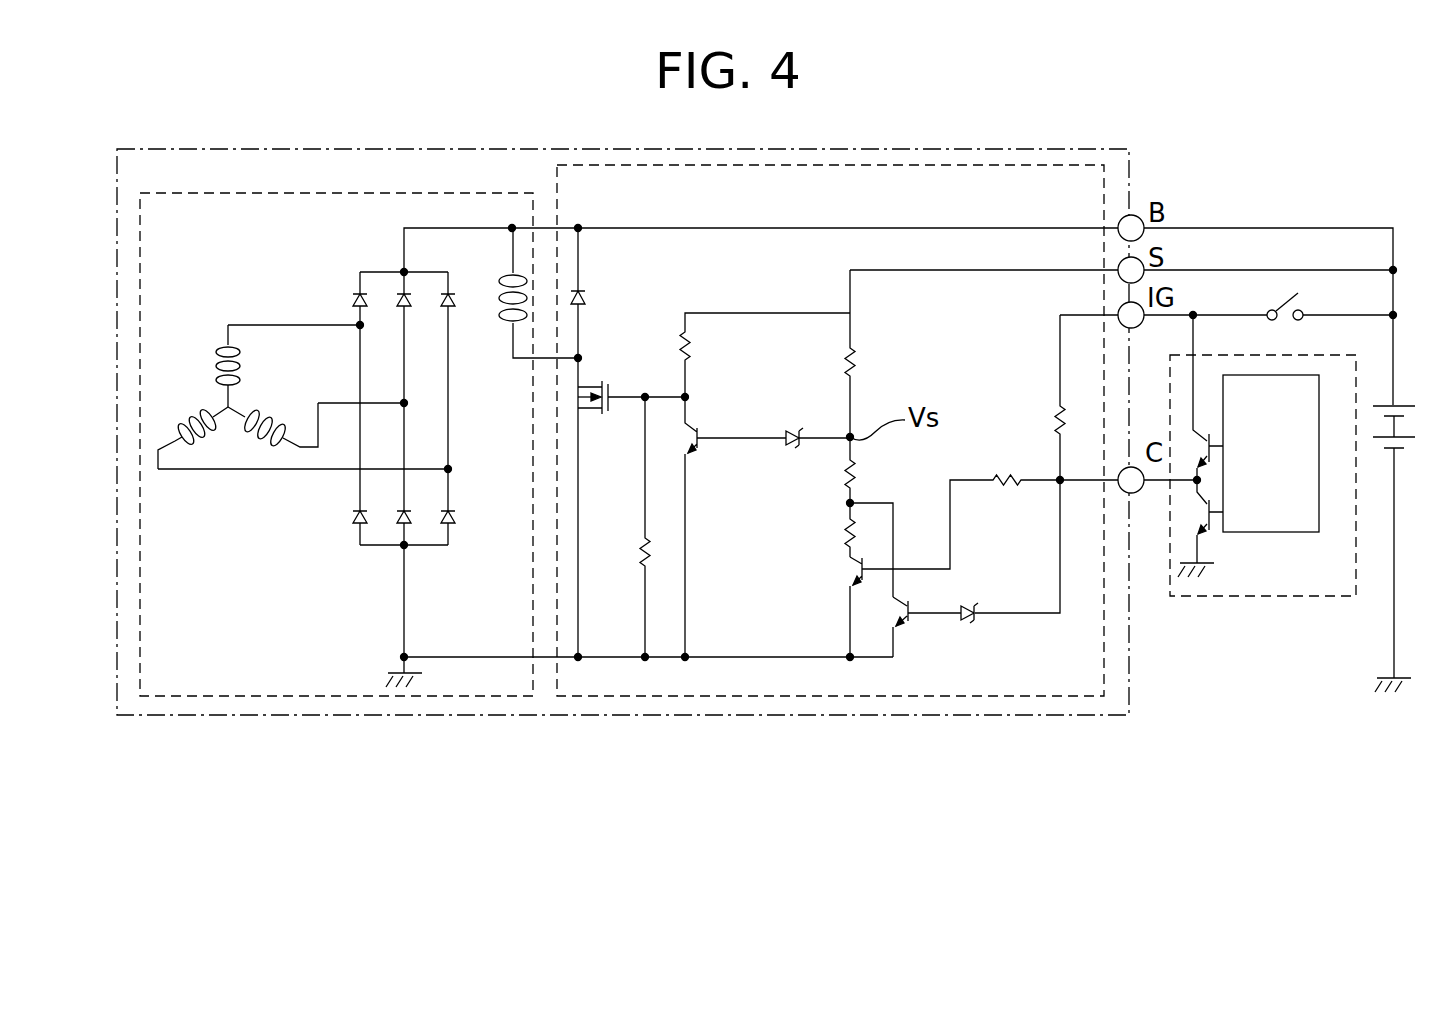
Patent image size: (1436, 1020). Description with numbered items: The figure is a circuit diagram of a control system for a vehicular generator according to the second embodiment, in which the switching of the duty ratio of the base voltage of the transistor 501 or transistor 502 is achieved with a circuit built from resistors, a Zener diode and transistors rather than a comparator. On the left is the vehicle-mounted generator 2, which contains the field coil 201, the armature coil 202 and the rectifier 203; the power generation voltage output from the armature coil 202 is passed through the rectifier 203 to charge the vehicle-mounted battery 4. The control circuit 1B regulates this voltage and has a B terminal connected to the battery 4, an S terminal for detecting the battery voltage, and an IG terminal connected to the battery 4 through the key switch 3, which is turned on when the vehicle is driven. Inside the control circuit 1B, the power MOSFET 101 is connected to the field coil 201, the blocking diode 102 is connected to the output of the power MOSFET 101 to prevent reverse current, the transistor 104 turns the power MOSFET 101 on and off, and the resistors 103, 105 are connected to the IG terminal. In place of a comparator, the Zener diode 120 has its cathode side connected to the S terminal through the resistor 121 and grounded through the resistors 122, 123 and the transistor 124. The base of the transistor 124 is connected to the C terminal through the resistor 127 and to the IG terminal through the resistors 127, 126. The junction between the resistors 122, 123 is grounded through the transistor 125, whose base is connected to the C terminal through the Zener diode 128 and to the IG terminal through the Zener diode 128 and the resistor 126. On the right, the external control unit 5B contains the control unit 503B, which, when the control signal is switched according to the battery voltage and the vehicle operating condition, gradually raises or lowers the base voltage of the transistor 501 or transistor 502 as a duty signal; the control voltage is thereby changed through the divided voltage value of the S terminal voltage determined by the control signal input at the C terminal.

The vehicle-mounted generator 2 is at (182, 193).
The control circuit 1B is at (1103, 192).
The field coil 201 is at (490, 293).
The armature coil 202 is at (210, 390).
The rectifier 203 is at (348, 302).
The power MOSFET 101 is at (605, 385).
The blocking diode 102 is at (590, 302).
The resistor 103 is at (622, 527).
The transistor 104 is at (695, 450).
The resistor 105 is at (693, 342).
The Zener diode 120 is at (813, 417).
The resistor 121 is at (874, 353).
The resistor 122 is at (825, 470).
The resistor 123 is at (825, 530).
The transistor 124 is at (852, 577).
The transistor 125 is at (913, 618).
The resistor 126 is at (1035, 397).
The resistor 127 is at (1048, 467).
The Zener diode 128 is at (977, 604).
The key switch 3 is at (1290, 297).
The vehicle-mounted battery 4 is at (1386, 403).
The external control unit 5B is at (1253, 597).
The transistor 501 is at (1208, 430).
The transistor 502 is at (1227, 532).
The control unit 503B is at (1278, 532).